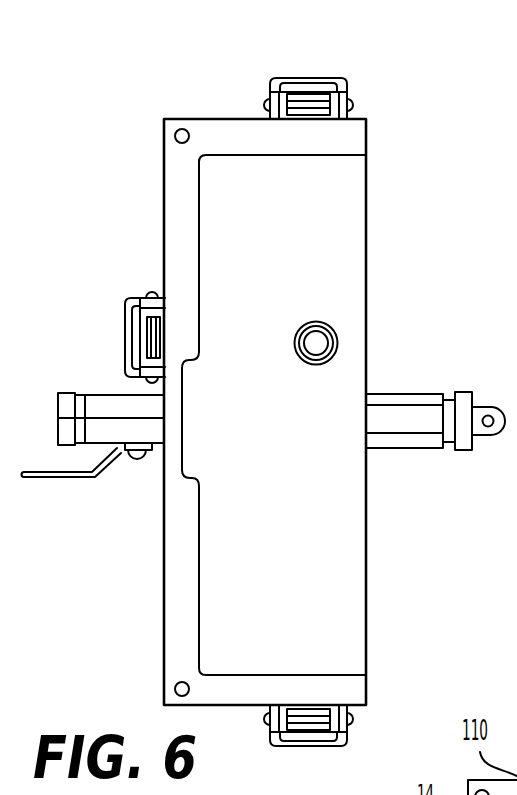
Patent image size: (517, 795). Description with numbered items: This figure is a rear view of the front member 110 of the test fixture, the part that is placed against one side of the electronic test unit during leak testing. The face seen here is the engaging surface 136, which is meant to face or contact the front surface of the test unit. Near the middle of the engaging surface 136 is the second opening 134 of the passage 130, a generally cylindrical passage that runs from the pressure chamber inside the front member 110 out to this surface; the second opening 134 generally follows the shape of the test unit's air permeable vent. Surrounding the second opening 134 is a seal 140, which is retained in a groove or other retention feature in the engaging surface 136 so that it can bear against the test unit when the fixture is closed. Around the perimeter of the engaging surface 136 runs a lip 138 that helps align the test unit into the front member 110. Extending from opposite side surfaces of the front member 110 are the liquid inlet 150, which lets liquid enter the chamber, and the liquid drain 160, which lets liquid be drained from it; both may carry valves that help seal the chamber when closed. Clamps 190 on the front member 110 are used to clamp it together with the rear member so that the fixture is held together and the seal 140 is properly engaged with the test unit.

The front member 110 is at (128, 100).
The passage 130 is at (318, 345).
The second opening 134 is at (294, 347).
The engaging surface 136 is at (330, 222).
The lip 138 is at (198, 553).
The seal 140 is at (297, 341).
The liquid inlet 150 is at (122, 428).
The liquid drain 160 is at (398, 421).
The clamps 190 is at (330, 83).